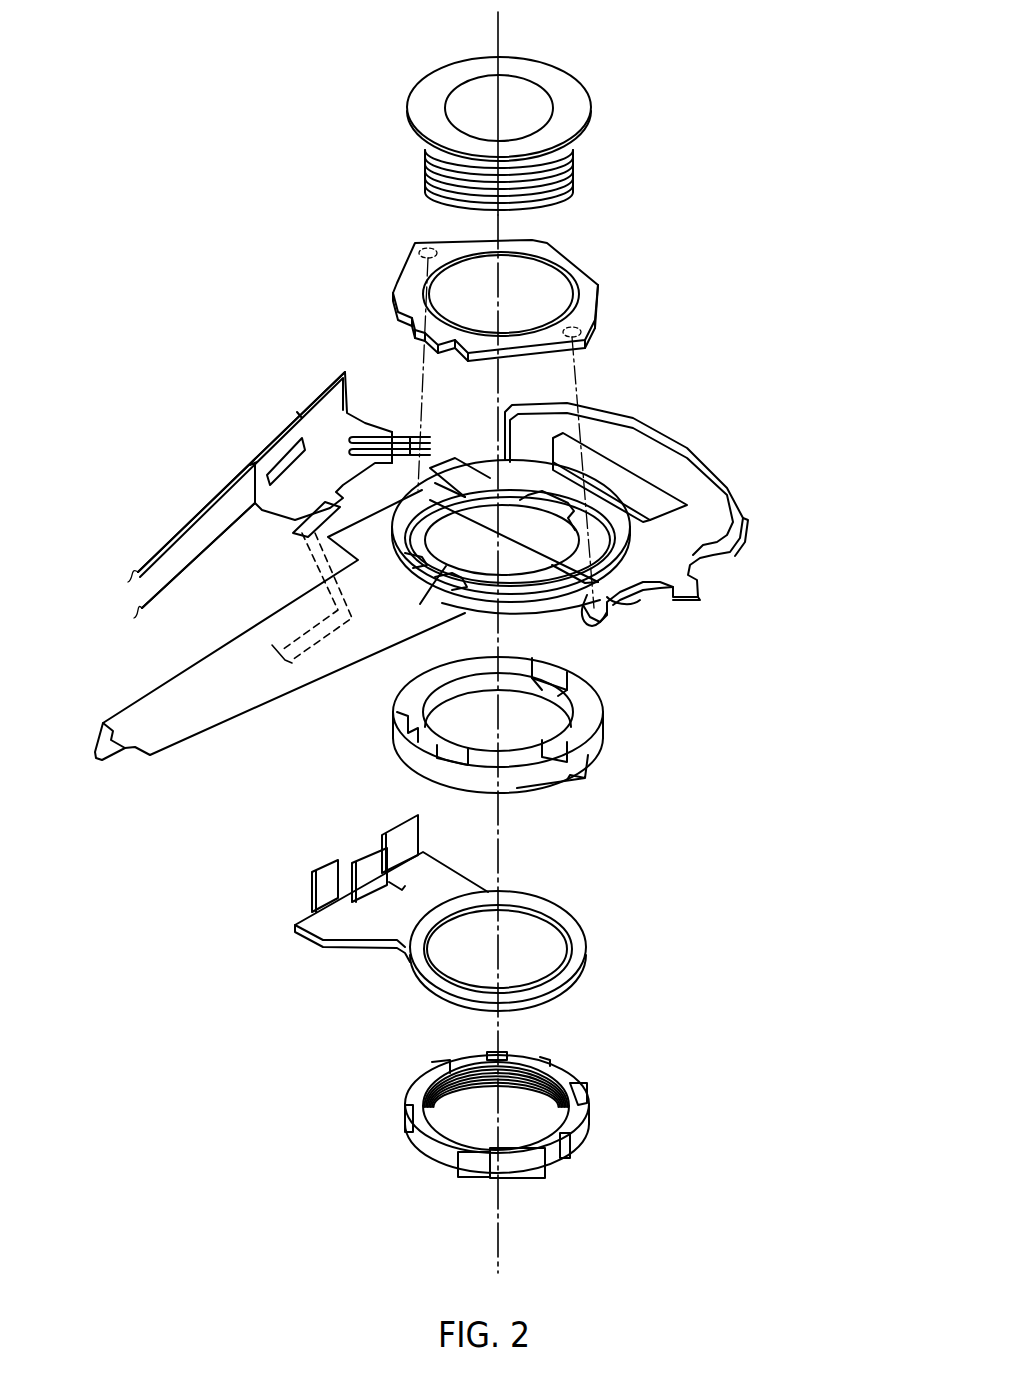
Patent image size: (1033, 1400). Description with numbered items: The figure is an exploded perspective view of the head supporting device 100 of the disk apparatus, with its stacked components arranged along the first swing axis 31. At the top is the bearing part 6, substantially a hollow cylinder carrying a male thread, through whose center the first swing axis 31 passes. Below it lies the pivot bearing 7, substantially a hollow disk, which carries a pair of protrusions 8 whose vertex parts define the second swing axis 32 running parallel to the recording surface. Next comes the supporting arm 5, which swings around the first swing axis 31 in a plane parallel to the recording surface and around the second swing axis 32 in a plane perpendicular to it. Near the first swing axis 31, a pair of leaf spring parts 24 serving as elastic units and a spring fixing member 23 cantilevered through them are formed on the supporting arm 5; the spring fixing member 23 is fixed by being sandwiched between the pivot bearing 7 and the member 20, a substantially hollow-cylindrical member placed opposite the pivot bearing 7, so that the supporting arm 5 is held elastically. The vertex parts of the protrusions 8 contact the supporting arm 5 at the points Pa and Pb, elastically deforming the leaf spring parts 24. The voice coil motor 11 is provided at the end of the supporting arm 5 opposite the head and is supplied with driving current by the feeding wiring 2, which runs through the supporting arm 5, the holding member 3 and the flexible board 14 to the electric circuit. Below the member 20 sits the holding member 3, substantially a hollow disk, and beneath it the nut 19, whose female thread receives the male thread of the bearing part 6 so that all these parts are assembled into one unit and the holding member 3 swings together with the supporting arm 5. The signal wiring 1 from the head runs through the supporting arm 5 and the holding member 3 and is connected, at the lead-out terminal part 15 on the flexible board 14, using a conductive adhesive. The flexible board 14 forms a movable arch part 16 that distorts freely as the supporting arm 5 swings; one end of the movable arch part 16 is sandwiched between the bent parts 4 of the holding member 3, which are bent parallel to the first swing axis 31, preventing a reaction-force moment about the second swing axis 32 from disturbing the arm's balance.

The first swing axis 31 is at (500, 32).
The head supporting device 100 is at (752, 112).
The bearing part 6 is at (582, 90).
The pivot bearing 7 is at (597, 278).
The protrusions 8 is at (422, 243).
The voice coil motor 11 is at (648, 442).
The spring fixing member 23 is at (466, 614).
The leaf spring parts 24 is at (460, 493).
The contact point Pb is at (423, 480).
The contact point Pa is at (580, 605).
The second swing axis 32 is at (617, 600).
The flexible board 14 is at (220, 485).
The movable arch part 16 is at (192, 528).
The feeding wiring 2 is at (412, 433).
The lead-out terminal part 15 is at (272, 520).
The signal wiring 1 is at (318, 627).
The supporting arm 5 is at (247, 708).
The member 20 is at (598, 713).
The holding member 3 is at (467, 877).
The bent parts 4 is at (323, 872).
The nut 19 is at (588, 1127).